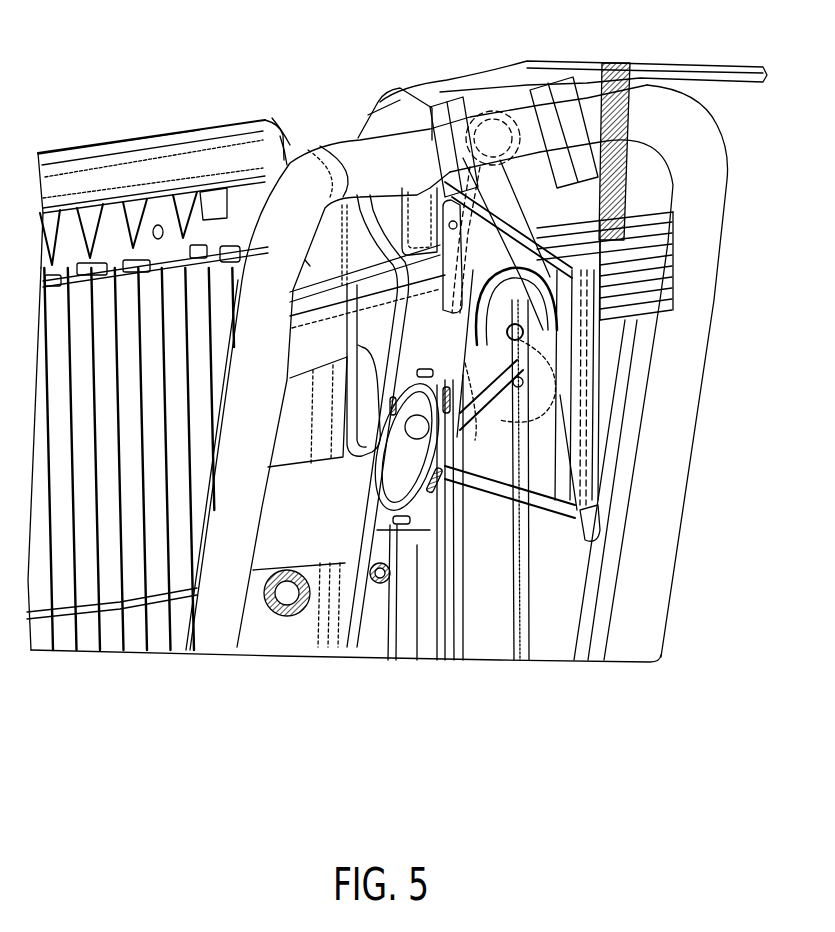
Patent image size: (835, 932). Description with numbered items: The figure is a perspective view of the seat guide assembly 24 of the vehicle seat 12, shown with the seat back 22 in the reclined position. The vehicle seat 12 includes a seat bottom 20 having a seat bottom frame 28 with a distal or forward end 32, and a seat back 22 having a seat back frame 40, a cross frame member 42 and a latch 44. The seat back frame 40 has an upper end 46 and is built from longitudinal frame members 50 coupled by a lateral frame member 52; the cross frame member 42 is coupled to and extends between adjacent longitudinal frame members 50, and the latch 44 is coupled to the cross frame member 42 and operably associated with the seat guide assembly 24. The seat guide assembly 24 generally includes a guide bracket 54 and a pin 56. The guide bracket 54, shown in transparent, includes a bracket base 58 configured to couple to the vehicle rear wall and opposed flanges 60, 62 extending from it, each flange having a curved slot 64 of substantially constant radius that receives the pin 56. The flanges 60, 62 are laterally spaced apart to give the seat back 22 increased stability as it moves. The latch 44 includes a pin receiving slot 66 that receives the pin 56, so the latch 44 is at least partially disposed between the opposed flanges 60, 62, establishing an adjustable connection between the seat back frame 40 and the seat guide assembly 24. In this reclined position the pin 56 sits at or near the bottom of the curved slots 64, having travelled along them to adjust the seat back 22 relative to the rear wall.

The vehicle seat 12 is at (131, 459).
The seat bottom 20 is at (161, 165).
The seat back 22 is at (323, 136).
The seat guide assembly 24 is at (463, 424).
The seat bottom frame 28 is at (118, 122).
The forward end 32 is at (286, 99).
The seat back frame 40 is at (112, 619).
The cross frame member 42 is at (256, 175).
The latch 44 is at (395, 101).
The upper end 46 is at (265, 124).
The longitudinal frame members 50 is at (458, 372).
The lateral frame member 52 is at (573, 63).
The guide bracket 54 is at (512, 495).
The pin 56 is at (508, 319).
The bracket base 58 is at (608, 565).
The flange 60 is at (482, 459).
The flange 62 is at (486, 163).
The curved slot 64 is at (510, 323).
The pin receiving slot 66 is at (453, 120).